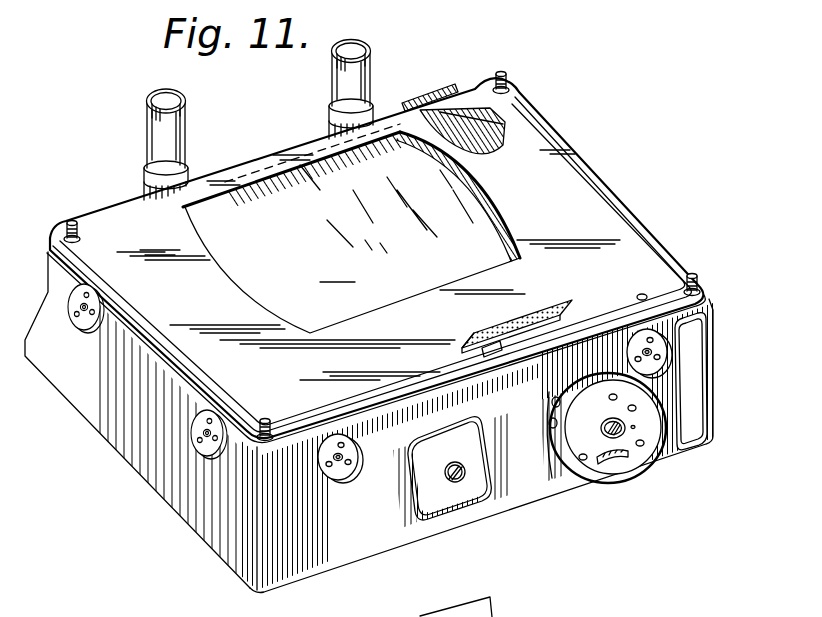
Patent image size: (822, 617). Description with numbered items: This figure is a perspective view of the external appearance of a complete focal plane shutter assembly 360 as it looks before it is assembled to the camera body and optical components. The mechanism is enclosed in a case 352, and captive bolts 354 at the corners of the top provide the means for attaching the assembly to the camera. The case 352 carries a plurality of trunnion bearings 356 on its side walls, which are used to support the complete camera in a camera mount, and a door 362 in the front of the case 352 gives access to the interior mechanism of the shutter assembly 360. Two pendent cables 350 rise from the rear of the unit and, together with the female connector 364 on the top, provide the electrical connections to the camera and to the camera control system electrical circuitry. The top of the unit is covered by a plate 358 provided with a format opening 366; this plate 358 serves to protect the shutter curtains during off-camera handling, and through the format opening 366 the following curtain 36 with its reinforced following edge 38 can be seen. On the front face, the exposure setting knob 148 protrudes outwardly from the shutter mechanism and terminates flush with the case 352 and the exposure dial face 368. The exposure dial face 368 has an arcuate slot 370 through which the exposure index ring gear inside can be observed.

The following curtain 36 is at (351, 232).
The reinforced following edge 38 is at (505, 138).
The exposure setting knob 148 is at (627, 421).
The pendent cables 350 is at (147, 144).
The case 352 is at (175, 485).
The captive bolts 354 is at (267, 421).
The trunnion bearings 356 is at (340, 475).
The plate 358 is at (612, 226).
The shutter assembly 360 is at (115, 442).
The door 362 is at (473, 490).
The female connector 364 is at (541, 336).
The format opening 366 is at (503, 222).
The exposure dial face 368 is at (567, 487).
The arcuate slot 370 is at (613, 462).